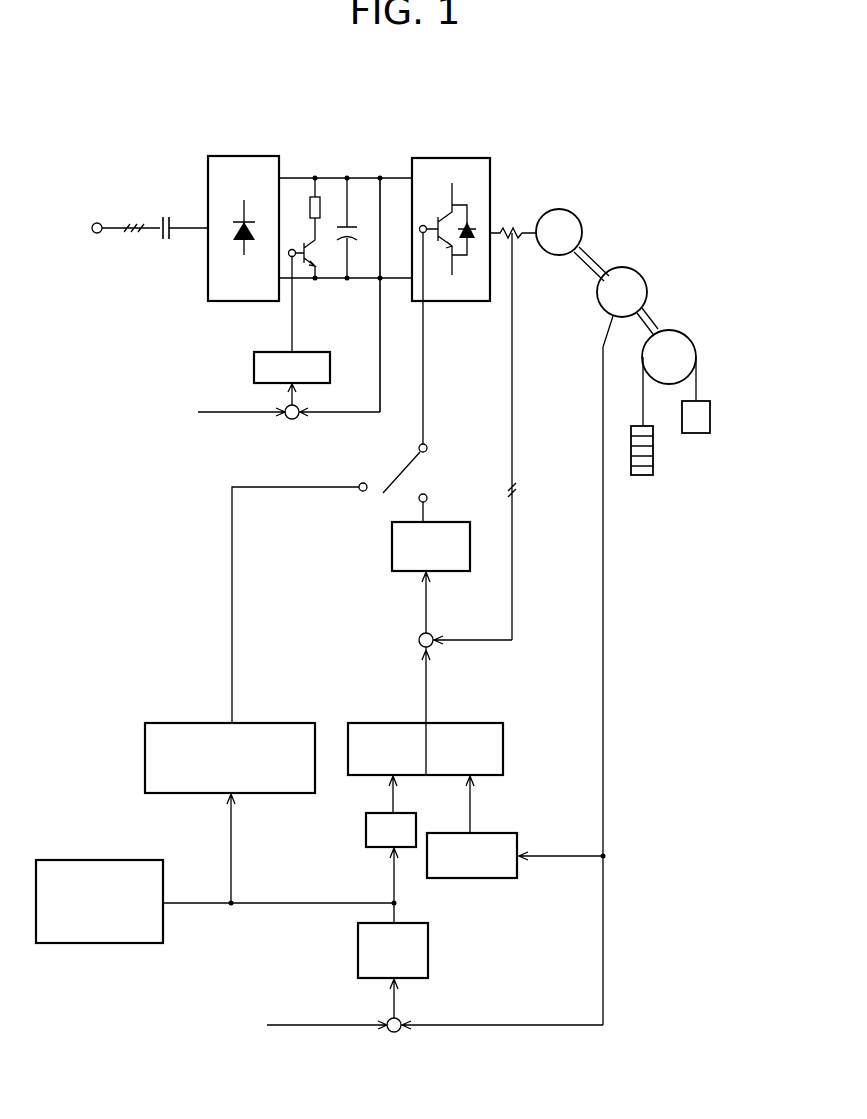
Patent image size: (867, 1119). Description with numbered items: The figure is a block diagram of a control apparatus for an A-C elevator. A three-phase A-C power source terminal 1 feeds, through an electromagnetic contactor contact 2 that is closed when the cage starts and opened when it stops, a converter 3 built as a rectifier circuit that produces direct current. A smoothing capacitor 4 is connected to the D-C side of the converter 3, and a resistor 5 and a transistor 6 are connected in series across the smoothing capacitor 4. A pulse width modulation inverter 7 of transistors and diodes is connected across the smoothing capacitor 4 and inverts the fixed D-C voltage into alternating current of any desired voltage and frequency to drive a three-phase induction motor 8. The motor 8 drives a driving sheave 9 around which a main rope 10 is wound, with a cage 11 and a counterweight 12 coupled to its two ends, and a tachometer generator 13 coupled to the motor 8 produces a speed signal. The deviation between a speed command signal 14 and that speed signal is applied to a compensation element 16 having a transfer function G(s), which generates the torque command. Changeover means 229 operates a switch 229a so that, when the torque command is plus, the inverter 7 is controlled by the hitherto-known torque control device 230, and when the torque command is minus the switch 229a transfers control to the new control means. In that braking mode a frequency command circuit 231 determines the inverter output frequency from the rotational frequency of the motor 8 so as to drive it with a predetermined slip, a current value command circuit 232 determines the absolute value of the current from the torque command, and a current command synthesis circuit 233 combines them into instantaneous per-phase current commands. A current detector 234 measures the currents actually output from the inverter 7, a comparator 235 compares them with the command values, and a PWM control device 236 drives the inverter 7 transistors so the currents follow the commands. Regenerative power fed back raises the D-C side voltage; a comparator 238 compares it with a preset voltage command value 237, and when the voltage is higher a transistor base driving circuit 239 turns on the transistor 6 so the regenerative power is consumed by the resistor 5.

The three-phase A-C power source terminal 1 is at (97, 221).
The electromagnetic contactor contact 2 is at (166, 216).
The converter 3 is at (245, 156).
The smoothing capacitor 4 is at (350, 225).
The resistor 5 is at (316, 200).
The transistor 6 is at (311, 262).
The inverter 7 is at (447, 158).
The three-phase induction motor 8 is at (561, 209).
The driving sheave 9 is at (680, 330).
The main rope 10 is at (698, 377).
The cage 11 is at (710, 415).
The counterweight 12 is at (653, 458).
The tachometer generator 13 is at (626, 267).
The speed command signal 14 is at (290, 1027).
The compensation element 16 is at (428, 952).
The changeover means 229 is at (93, 945).
The switch 229a is at (426, 450).
The torque control device 230 is at (145, 762).
The frequency command circuit 231 is at (472, 879).
The current value command circuit 232 is at (366, 832).
The current command synthesis circuit 233 is at (503, 748).
The current detector 234 is at (512, 226).
The comparator 235 is at (420, 638).
The PWM control device 236 is at (392, 548).
The preset voltage command value 237 is at (210, 414).
The comparator 238 is at (293, 421).
The transistor base driving circuit 239 is at (254, 370).